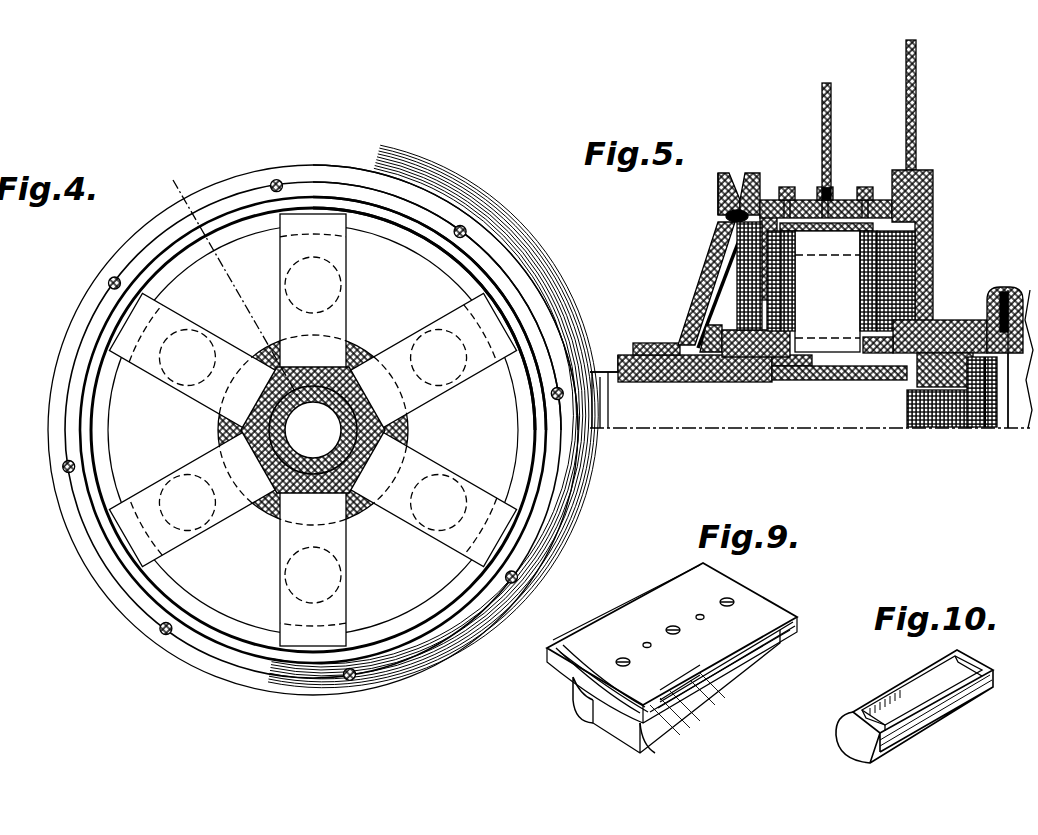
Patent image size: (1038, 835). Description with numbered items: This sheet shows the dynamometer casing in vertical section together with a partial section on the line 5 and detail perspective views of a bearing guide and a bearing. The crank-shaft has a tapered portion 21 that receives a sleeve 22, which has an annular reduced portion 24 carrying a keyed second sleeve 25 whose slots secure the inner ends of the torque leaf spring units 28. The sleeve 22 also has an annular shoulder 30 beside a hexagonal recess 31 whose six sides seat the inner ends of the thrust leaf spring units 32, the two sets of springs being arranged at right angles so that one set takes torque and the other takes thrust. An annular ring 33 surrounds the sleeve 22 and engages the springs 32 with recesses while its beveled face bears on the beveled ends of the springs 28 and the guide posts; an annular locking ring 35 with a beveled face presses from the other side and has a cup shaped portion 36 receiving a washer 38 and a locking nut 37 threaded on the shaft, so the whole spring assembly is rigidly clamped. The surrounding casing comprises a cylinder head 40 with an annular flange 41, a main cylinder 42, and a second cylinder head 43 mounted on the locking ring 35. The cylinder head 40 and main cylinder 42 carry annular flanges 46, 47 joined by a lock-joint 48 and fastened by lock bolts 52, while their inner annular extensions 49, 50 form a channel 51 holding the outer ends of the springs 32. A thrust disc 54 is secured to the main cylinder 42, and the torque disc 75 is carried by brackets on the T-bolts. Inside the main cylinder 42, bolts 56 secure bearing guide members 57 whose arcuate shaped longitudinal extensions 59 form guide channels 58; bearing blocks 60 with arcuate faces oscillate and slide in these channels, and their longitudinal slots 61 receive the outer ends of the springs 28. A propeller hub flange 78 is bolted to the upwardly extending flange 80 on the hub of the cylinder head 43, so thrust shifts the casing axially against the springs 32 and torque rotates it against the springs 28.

In FIG. 4, the section line 5 is at (178, 176).
In FIG. 4, the tapered portion 21 is at (318, 475).
In FIG. 5, the tapered portion 21 is at (831, 420).
In FIG. 4, the sleeve 22 is at (275, 505).
In FIG. 5, the sleeve 22 is at (614, 353).
In FIG. 5, the annular reduced portion 24 is at (814, 382).
In FIG. 5, the second sleeve 25 is at (785, 367).
In FIG. 5, the leaf spring units 28 is at (827, 291).
In FIG. 5, the annular shoulder 30 is at (722, 338).
In FIG. 4, the recess 31 is at (352, 336).
In FIG. 4, the leaf spring units 32 is at (195, 427).
In FIG. 5, the annular ring 33 is at (752, 358).
In FIG. 5, the annular locking ring 35 is at (905, 360).
In FIG. 5, the cup shaped portion 36 is at (950, 337).
In FIG. 5, the locking nut 37 is at (940, 400).
In FIG. 5, the washer 38 is at (982, 390).
In FIG. 4, the cylinder head 40 is at (323, 420).
In FIG. 5, the cylinder head 40 is at (690, 303).
In FIG. 5, the annular flange 41 is at (660, 348).
In FIG. 5, the main cylinder 42 is at (915, 270).
In FIG. 5, the second cylinder head 43 is at (933, 205).
In FIG. 4, the annular flange 46 is at (386, 180).
In FIG. 5, the annular flange 46 is at (726, 173).
In FIG. 5, the annular flange 47 is at (753, 173).
In FIG. 4, the lock-joint 48 is at (415, 200).
In FIG. 5, the lock-joint 48 is at (718, 195).
In FIG. 4, the annular extension 49 is at (380, 230).
In FIG. 5, the annular extension 49 is at (720, 230).
In FIG. 5, the annular extension 50 is at (727, 246).
In FIG. 4, the channel 51 is at (410, 238).
In FIG. 5, the channel 51 is at (728, 216).
In FIG. 4, the lock bolts 52 is at (465, 228).
In FIG. 5, the thrust disc 54 is at (916, 122).
In FIG. 5, the bolts 56 is at (822, 187).
In FIG. 5, the bearing guide members 57 is at (848, 200).
In FIG. 9, the bearing guide members 57 is at (672, 643).
In FIG. 5, the guide channels 58 is at (812, 235).
In FIG. 9, the guide channels 58 is at (620, 712).
In FIG. 5, the arcuate shaped longitudinal extensions 59 is at (840, 245).
In FIG. 9, the arcuate shaped longitudinal extensions 59 is at (582, 715).
In FIG. 5, the bearing blocks 60 is at (878, 228).
In FIG. 10, the bearing blocks 60 is at (957, 708).
In FIG. 5, the slots 61 is at (868, 252).
In FIG. 10, the slots 61 is at (918, 688).
In FIG. 5, the torque disc 75 is at (831, 126).
In FIG. 5, the flange 78 is at (1012, 290).
In FIG. 5, the flange 80 is at (994, 290).